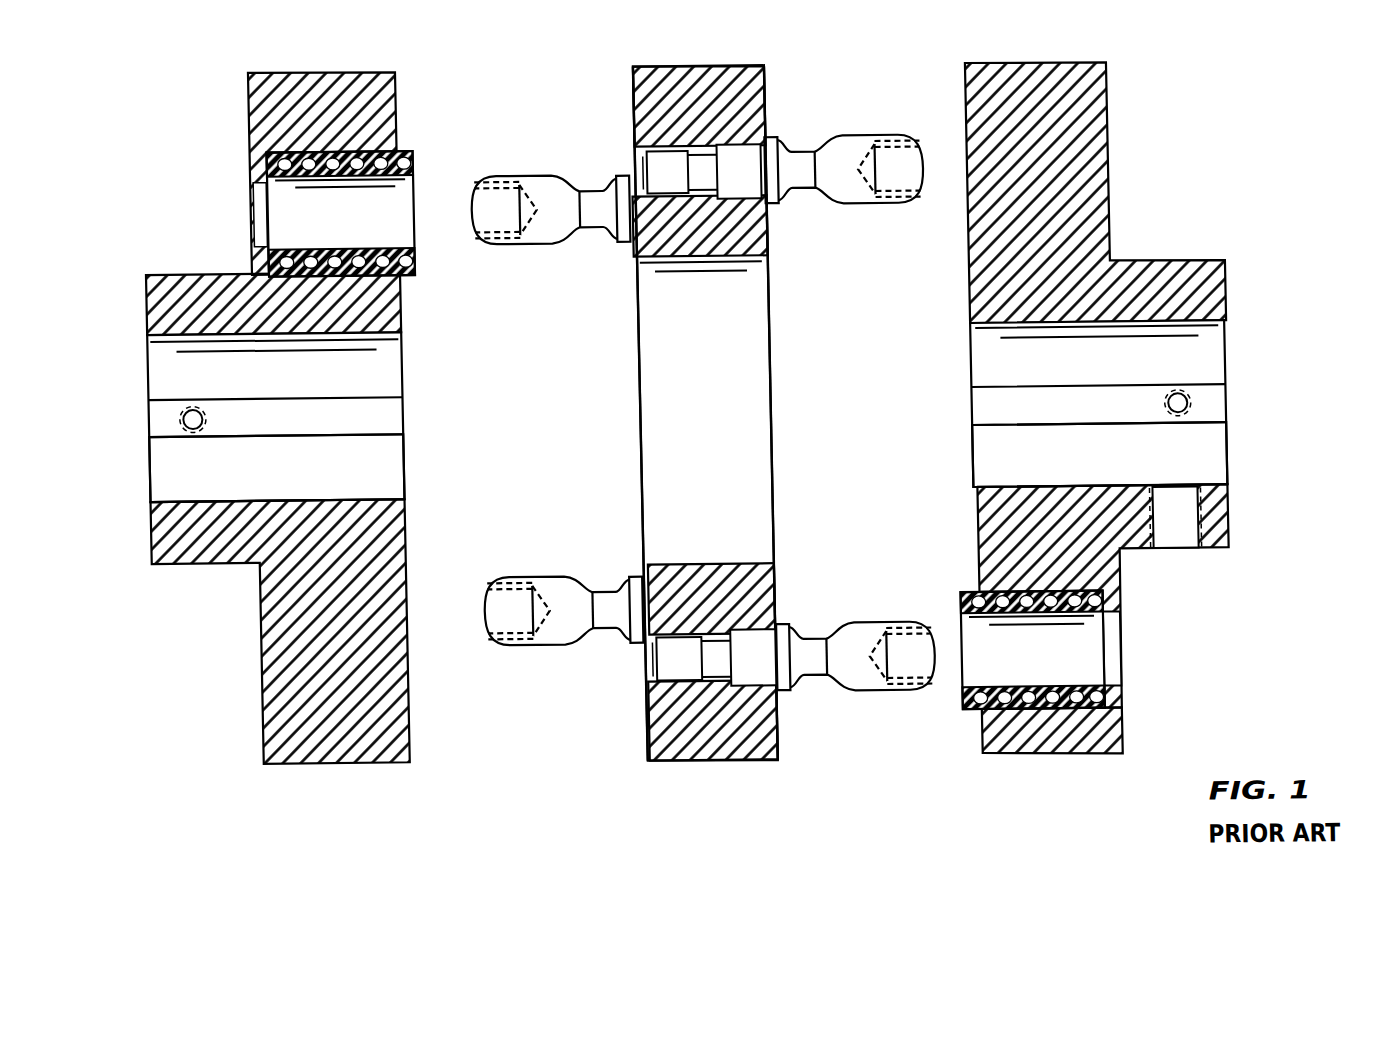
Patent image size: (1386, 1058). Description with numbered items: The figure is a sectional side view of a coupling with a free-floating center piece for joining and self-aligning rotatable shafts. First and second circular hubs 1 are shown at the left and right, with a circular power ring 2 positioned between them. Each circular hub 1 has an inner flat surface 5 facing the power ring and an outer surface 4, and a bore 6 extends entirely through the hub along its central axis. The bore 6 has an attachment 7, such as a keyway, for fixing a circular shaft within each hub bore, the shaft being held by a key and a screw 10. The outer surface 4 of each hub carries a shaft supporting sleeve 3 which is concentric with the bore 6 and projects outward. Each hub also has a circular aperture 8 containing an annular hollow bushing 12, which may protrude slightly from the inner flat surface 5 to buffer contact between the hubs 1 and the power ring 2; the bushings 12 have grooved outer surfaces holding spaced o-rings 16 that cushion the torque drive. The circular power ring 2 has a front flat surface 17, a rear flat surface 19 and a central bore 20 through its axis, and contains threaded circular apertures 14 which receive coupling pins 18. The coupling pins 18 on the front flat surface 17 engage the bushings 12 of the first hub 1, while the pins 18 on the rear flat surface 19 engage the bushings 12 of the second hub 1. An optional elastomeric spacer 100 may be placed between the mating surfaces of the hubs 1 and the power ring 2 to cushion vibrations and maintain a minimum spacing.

The circular hub 1 is at (357, 69).
The circular power ring 2 is at (702, 394).
The shaft supporting sleeve 3 is at (171, 277).
The outer surface 4 is at (256, 128).
The inner flat surface 5 is at (402, 302).
The bore 6 is at (391, 467).
The attachment 7 is at (388, 417).
The circular aperture 8 is at (685, 426).
The screw 10 is at (175, 414).
The annular hollow bushing 12 is at (425, 157).
The circular aperture 14 is at (750, 191).
The o-ring 16 is at (415, 265).
The front flat surface 17 is at (638, 353).
The coupling pin 18 is at (856, 137).
The rear flat surface 19 is at (774, 341).
The central bore 20 is at (665, 414).
The elastomeric spacer 100 is at (107, 788).